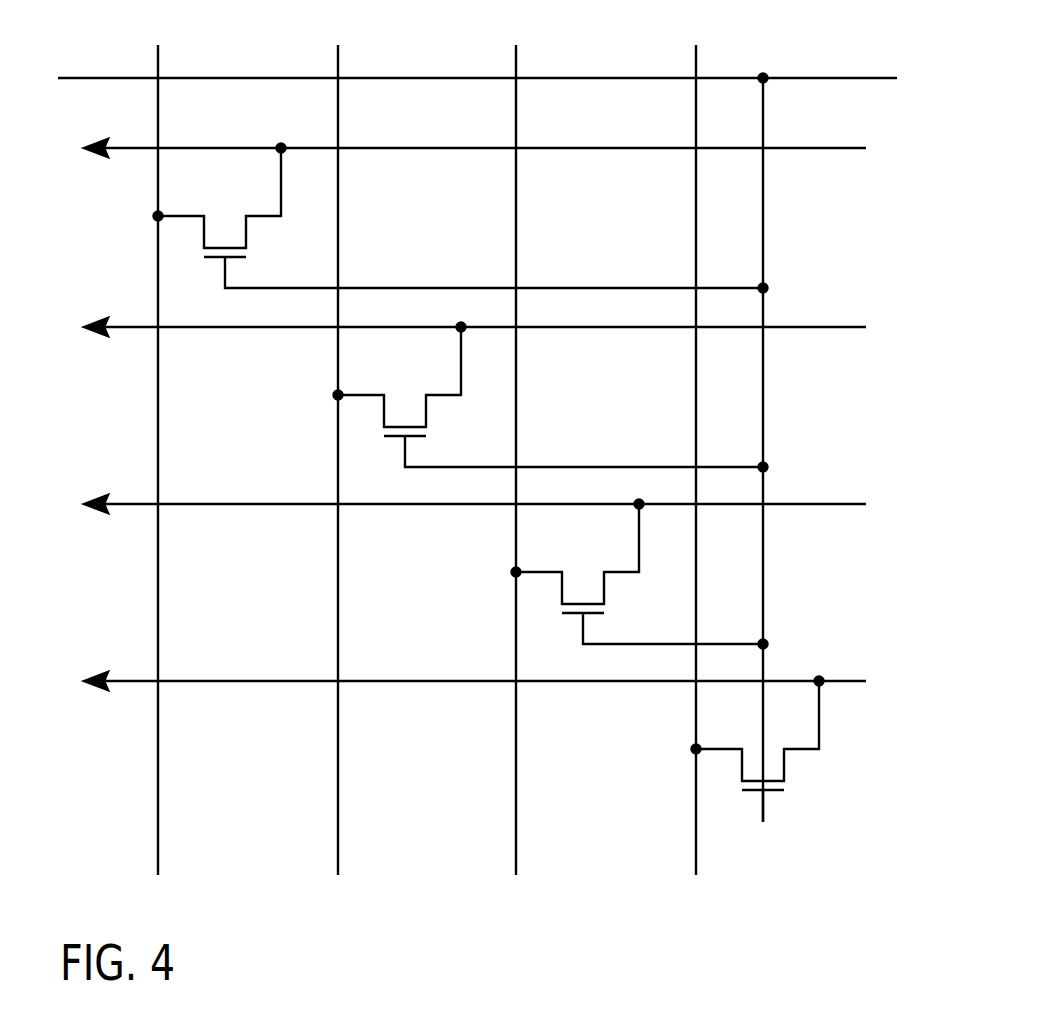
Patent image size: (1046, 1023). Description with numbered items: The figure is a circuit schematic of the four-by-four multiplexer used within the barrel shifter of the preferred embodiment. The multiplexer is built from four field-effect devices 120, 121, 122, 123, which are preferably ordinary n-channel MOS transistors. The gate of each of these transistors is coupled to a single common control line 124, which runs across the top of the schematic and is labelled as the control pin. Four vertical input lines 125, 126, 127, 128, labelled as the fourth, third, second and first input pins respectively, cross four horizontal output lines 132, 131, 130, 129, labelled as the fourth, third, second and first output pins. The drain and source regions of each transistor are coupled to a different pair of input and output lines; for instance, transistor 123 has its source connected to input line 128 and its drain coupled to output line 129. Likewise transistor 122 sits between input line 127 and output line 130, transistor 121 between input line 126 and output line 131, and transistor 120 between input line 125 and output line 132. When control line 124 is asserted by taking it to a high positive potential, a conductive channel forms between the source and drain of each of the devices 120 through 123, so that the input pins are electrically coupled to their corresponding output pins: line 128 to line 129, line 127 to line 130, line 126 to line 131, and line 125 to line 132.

The field-effect device 120 is at (246, 232).
The field-effect device 121 is at (426, 406).
The field-effect device 122 is at (604, 580).
The field-effect device 123 is at (784, 765).
The control line 124 is at (803, 77).
The input line 125 is at (159, 770).
The input line 126 is at (339, 780).
The input line 127 is at (517, 788).
The input line 128 is at (695, 803).
The output line 129 is at (240, 680).
The output line 130 is at (243, 503).
The output line 131 is at (250, 328).
The output line 132 is at (190, 147).